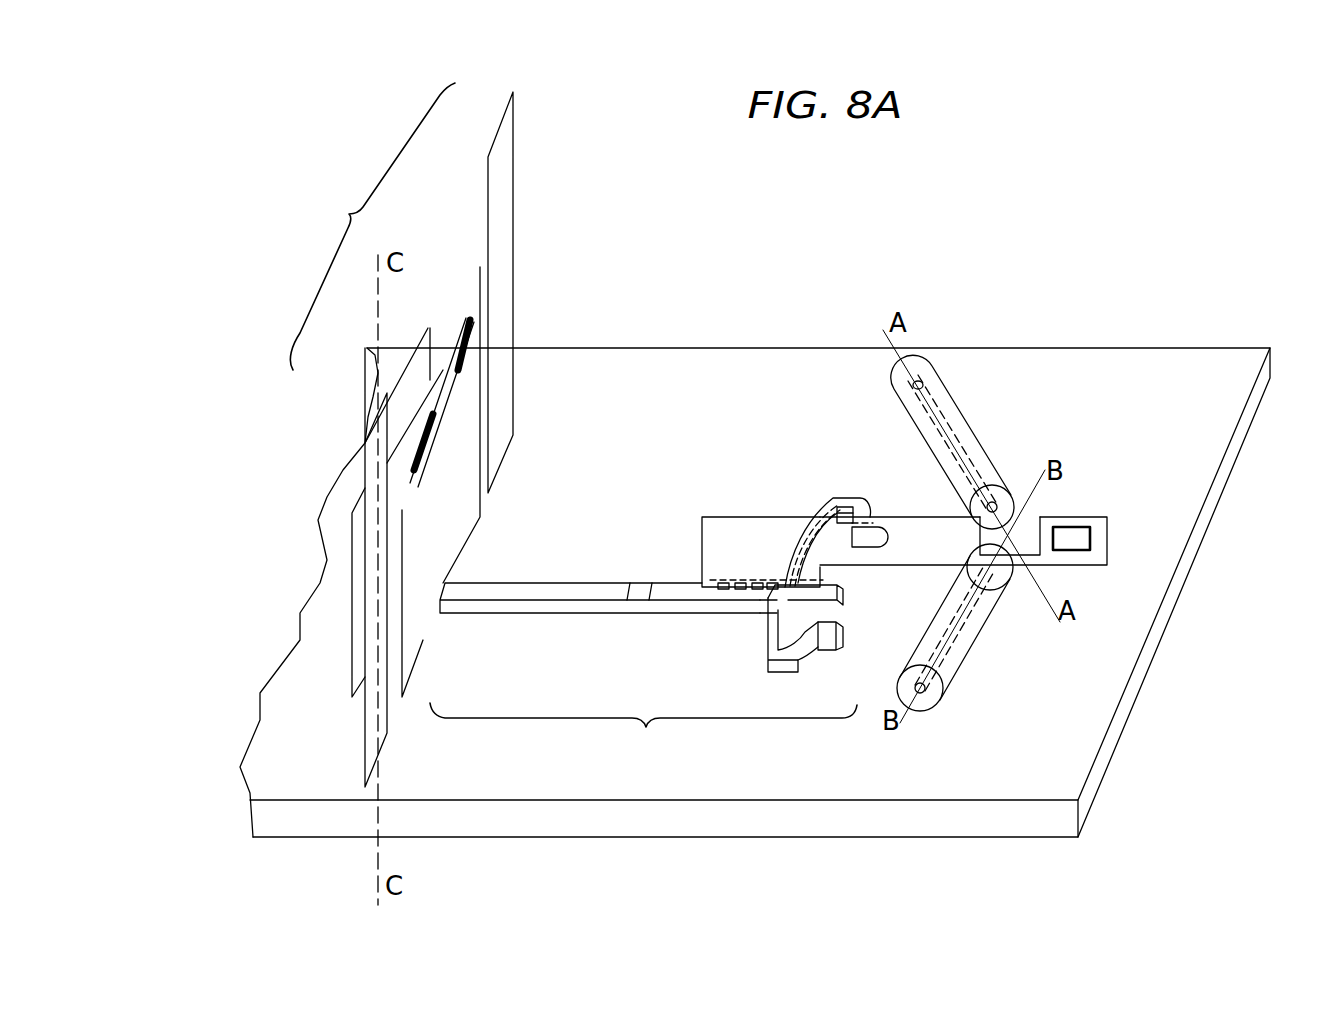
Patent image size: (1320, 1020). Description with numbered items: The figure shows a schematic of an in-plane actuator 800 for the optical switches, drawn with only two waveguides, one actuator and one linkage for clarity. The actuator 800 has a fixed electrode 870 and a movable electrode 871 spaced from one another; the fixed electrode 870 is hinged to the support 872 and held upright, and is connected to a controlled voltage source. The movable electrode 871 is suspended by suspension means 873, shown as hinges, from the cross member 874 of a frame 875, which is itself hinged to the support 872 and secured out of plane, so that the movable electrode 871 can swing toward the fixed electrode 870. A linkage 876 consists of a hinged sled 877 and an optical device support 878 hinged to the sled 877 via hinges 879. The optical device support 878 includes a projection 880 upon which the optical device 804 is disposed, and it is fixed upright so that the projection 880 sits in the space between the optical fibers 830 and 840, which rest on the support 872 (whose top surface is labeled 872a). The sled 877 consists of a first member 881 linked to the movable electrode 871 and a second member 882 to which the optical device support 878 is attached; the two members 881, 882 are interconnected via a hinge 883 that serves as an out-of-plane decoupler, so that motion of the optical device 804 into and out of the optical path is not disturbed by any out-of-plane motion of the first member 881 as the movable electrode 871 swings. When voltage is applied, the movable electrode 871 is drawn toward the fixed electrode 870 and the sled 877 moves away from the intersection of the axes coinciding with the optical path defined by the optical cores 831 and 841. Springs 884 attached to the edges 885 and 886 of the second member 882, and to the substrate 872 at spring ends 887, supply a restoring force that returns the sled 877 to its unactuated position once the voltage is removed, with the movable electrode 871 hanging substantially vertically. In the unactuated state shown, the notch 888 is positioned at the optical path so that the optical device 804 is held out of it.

The in-plane actuator 800 is at (372, 226).
The optical device 804 is at (1073, 537).
The optical waveguide 830 is at (957, 680).
The optical core 831 is at (967, 630).
The optical waveguide 840 is at (951, 390).
The optical core 841 is at (963, 432).
The fixed electrode 870 is at (352, 575).
The movable electrode 871 is at (425, 642).
The support 872 is at (1178, 348).
The substrate top surface 872a is at (1110, 393).
The suspension means 873 is at (482, 333).
The cross member 874 is at (483, 265).
The frame 875 is at (517, 388).
The linkage 876 is at (643, 735).
The sled 877 is at (657, 555).
The optical device support 878 is at (734, 546).
The hinges 879 is at (768, 582).
The projection 880 is at (935, 530).
The first member 881 is at (523, 595).
The second member 882 is at (693, 603).
The hinge 883 is at (630, 607).
The springs 884 is at (753, 650).
The edge 885 is at (755, 607).
The edge 886 is at (777, 578).
The spring ends 887 is at (882, 548).
The notch 888 is at (1028, 530).